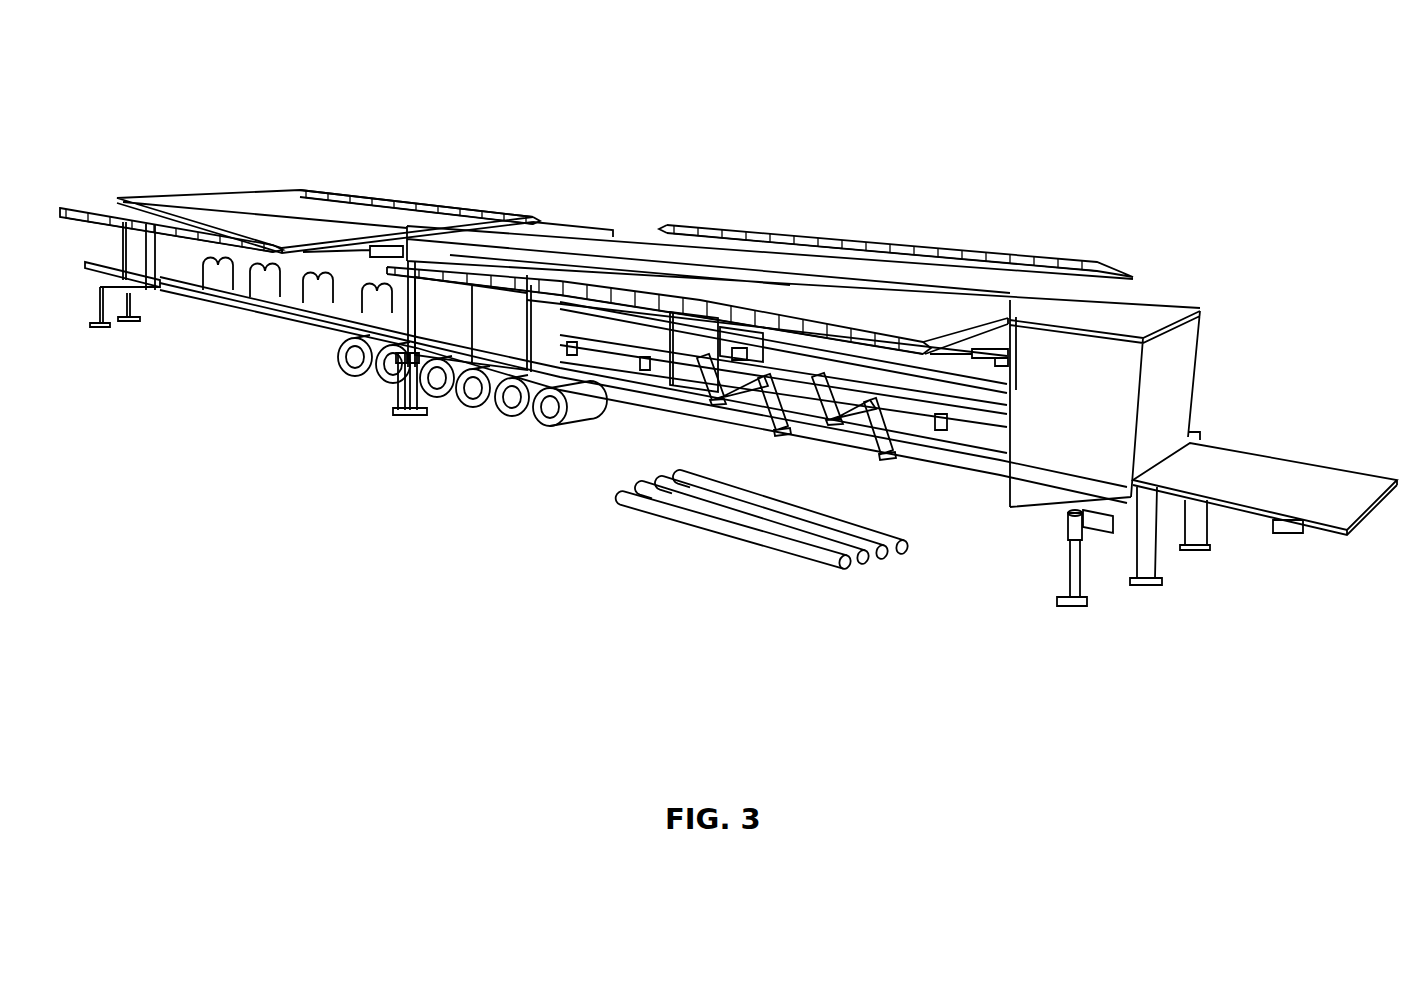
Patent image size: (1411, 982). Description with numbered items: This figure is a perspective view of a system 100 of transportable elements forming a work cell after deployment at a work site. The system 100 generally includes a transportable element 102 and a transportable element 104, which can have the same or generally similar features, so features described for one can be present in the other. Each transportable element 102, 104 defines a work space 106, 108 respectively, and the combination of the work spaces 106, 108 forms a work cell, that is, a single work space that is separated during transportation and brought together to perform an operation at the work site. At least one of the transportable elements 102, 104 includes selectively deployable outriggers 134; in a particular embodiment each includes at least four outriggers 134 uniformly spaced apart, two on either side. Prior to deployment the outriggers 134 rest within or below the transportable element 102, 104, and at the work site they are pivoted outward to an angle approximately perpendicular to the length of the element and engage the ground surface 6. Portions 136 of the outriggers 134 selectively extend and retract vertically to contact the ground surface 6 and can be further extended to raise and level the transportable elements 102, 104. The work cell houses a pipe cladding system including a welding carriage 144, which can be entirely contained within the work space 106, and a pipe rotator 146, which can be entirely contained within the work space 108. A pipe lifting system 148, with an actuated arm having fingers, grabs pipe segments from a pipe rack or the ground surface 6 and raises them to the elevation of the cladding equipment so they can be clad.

The system 100 is at (1216, 76).
The transportable element 102 is at (200, 196).
The transportable element 104 is at (1173, 303).
The work space 106 is at (393, 250).
The work space 108 is at (995, 340).
The selectively deployable outrigger 134 is at (108, 327).
The portion of outrigger 136 is at (1068, 560).
The welding carriage 144 is at (322, 290).
The pipe rotator 146 is at (856, 368).
The lifting system 148 is at (875, 440).
The ground surface 6 is at (172, 346).